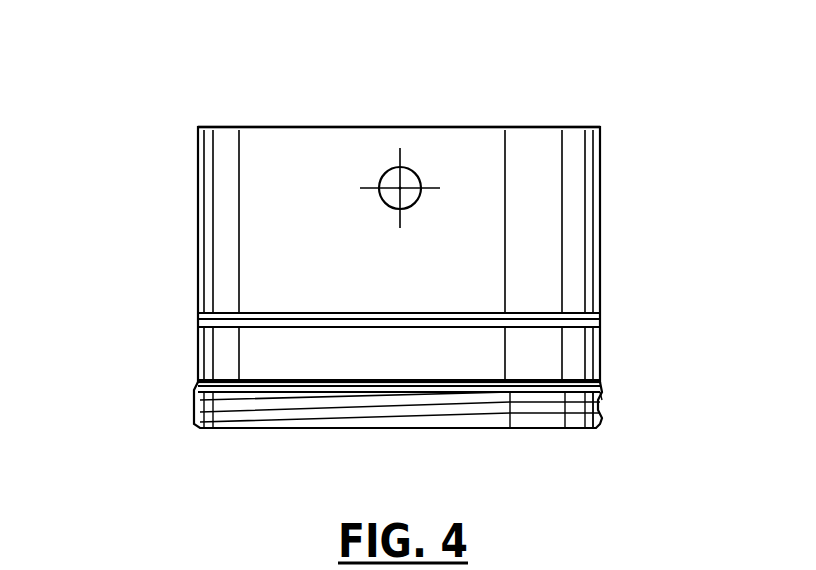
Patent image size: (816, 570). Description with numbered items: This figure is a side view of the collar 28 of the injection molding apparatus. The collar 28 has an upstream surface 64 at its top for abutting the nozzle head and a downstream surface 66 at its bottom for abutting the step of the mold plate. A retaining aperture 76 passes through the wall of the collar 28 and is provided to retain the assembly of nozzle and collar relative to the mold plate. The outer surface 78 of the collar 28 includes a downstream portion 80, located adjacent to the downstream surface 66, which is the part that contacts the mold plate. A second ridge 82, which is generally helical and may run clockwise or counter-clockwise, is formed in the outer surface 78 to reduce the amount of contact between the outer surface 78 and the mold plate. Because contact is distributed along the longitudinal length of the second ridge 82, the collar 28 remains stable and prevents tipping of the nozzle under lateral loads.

The collar 28 is at (585, 246).
The upstream surface 64 is at (225, 127).
The downstream surface 66 is at (216, 430).
The retaining aperture 76 is at (413, 178).
The outer surface 78 is at (198, 241).
The downstream portion 80 is at (186, 413).
The second ridge 82 is at (598, 397).